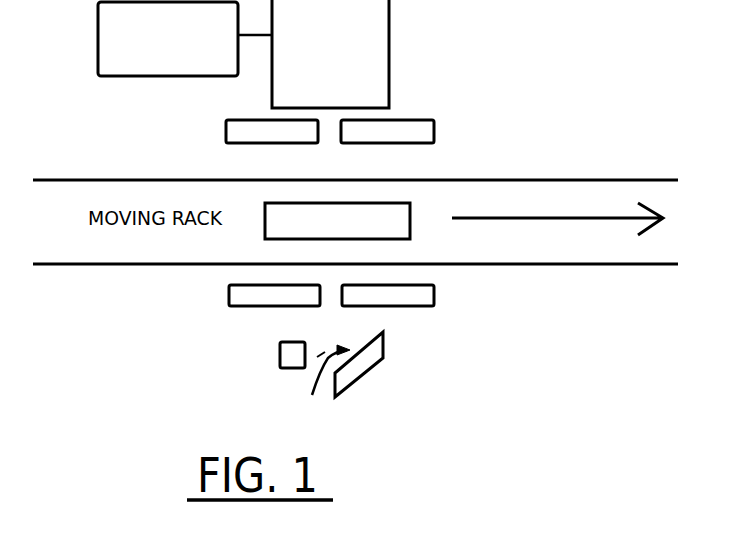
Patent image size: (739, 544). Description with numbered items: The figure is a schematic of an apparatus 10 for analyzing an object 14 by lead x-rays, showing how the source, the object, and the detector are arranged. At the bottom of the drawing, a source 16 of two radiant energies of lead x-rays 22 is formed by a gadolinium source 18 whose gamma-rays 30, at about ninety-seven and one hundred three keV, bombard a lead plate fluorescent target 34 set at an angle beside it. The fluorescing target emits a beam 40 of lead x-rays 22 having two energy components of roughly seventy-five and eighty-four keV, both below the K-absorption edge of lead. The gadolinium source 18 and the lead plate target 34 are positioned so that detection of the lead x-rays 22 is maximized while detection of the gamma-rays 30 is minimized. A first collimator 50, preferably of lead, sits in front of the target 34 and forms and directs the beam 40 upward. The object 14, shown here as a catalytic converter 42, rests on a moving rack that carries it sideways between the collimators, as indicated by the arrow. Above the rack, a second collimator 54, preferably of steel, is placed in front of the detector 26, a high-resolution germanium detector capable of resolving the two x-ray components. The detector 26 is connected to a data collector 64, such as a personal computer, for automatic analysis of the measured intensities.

The apparatus 10 is at (406, 404).
The object 14 is at (387, 213).
The source 16 is at (192, 378).
The Gd-153 source 18 is at (300, 368).
The lead x-rays 22 is at (276, 308).
The detector 26 is at (389, 32).
The gamma-rays 30 is at (317, 385).
The lead plate fluorescent target 34 is at (385, 356).
The beam 40 is at (335, 277).
The catalytic converter 42 is at (410, 212).
The first collimator 50 is at (434, 296).
The second collimator 54 is at (434, 131).
The data collector 64 is at (98, 42).